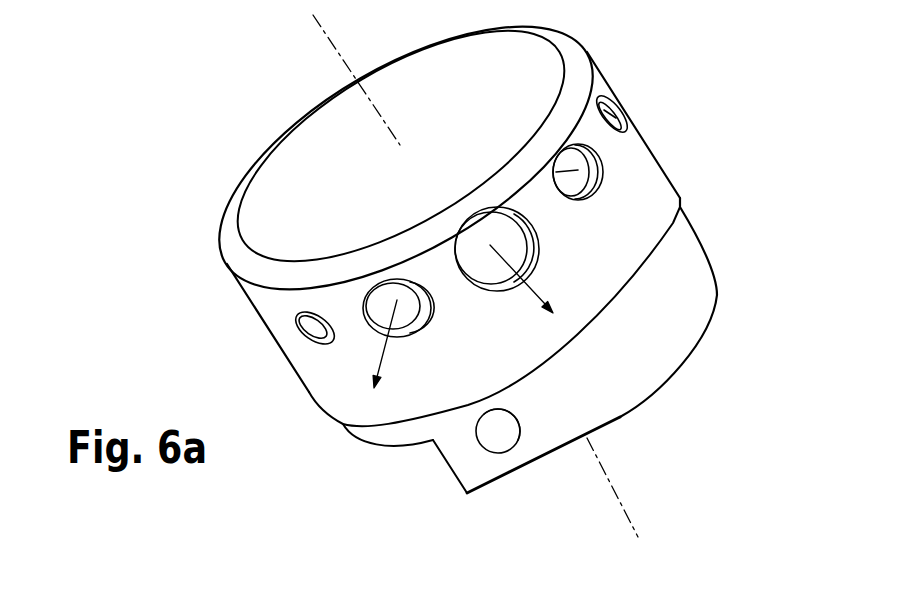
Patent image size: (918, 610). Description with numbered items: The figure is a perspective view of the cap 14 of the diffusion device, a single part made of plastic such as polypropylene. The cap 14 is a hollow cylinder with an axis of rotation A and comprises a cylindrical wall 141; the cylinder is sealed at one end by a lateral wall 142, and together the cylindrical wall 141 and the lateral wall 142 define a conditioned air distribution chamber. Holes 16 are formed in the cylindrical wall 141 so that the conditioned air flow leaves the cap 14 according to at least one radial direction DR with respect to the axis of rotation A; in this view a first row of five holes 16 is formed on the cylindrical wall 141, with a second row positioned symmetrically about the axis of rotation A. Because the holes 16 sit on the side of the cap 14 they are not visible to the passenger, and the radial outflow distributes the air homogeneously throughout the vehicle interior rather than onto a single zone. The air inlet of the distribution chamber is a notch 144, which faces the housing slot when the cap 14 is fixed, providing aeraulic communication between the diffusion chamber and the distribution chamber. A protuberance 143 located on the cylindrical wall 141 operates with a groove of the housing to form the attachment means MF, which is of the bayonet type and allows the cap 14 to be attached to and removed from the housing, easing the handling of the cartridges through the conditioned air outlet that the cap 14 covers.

The cap 14 is at (414, 271).
The cylindrical wall 141 is at (262, 320).
The lateral wall 142 is at (298, 175).
The protuberance 143 is at (500, 432).
The notch 144 is at (445, 457).
The holes 16 is at (605, 182).
The attachment means MF is at (540, 403).
The radial direction DR is at (486, 321).
The axis of rotation A is at (457, 274).